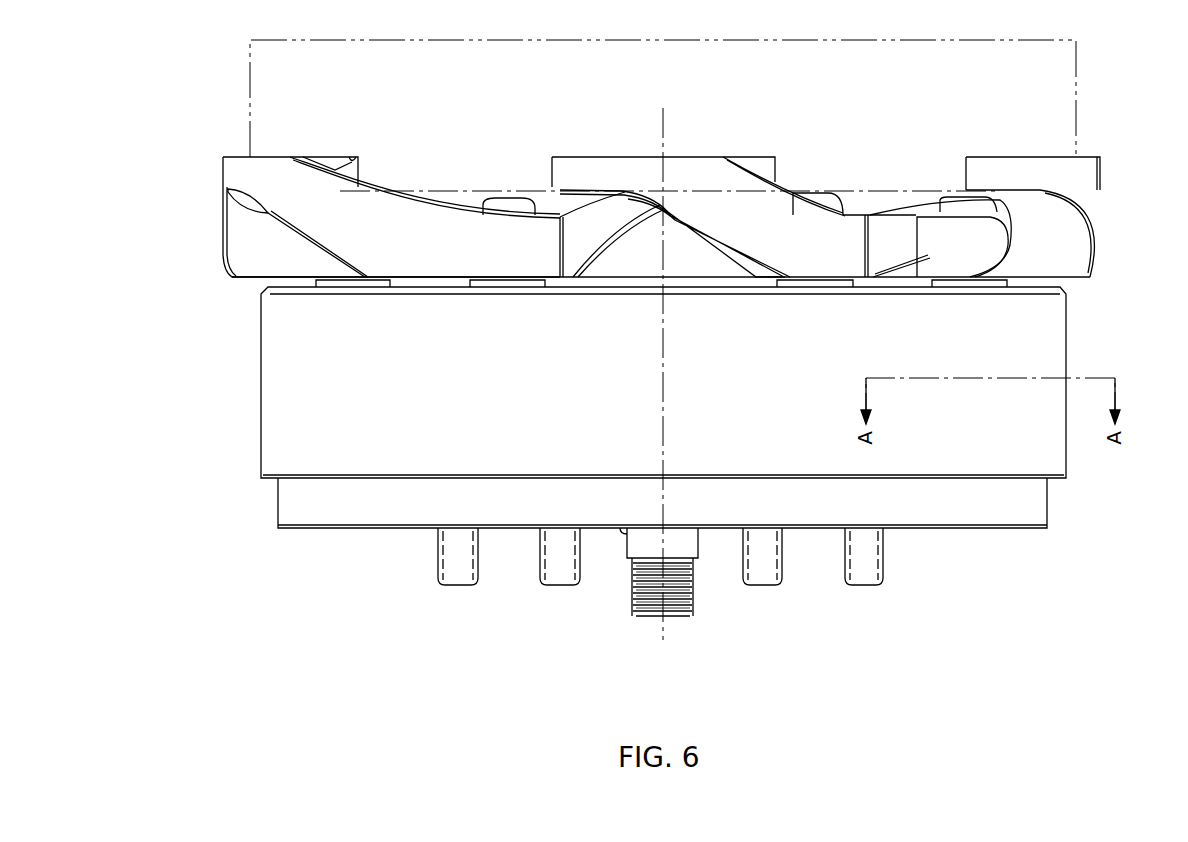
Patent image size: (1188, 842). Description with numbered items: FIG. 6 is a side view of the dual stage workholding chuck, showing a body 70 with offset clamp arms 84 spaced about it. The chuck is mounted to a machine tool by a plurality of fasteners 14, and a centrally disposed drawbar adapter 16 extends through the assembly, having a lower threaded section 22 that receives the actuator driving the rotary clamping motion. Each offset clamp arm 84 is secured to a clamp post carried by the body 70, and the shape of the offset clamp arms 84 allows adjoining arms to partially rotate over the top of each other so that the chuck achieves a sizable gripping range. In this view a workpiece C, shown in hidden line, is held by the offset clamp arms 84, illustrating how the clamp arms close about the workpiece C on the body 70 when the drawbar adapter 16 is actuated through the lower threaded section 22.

The body 70 is at (256, 385).
The offset clamp arm 84 is at (1105, 233).
The fasteners 14 is at (885, 568).
The drawbar adapter 16 is at (698, 555).
The lower threaded section 22 is at (628, 595).
The workpiece C is at (1082, 90).